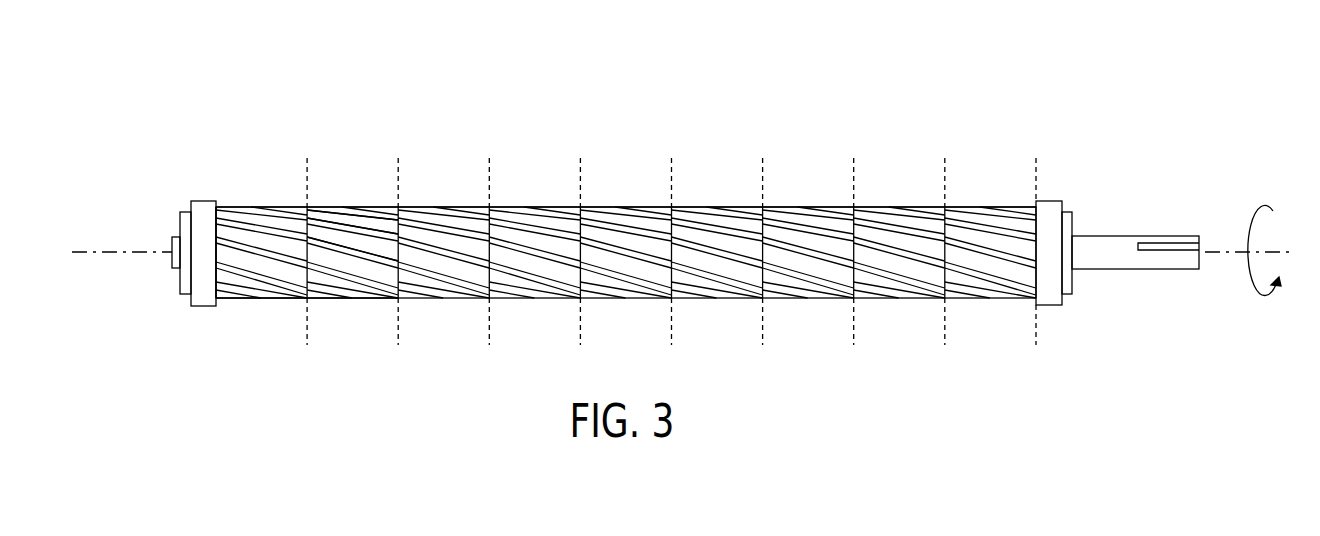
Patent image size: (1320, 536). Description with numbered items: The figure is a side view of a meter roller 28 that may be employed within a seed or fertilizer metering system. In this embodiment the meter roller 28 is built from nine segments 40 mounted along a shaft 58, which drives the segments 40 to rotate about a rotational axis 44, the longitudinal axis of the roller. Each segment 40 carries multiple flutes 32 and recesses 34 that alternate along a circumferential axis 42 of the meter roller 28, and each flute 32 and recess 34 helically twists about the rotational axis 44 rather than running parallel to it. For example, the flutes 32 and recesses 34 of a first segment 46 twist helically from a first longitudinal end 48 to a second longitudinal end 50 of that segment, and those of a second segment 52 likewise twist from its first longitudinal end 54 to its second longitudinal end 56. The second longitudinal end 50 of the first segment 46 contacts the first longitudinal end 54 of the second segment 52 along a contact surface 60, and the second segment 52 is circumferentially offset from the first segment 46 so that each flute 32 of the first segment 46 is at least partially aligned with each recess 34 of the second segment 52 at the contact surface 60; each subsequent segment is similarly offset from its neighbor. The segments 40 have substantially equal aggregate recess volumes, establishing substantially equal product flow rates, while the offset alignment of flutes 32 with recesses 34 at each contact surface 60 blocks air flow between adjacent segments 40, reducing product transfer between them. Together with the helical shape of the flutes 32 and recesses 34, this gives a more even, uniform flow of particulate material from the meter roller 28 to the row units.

The meter roller 28 is at (617, 86).
The flutes 32 is at (594, 259).
The recesses 34 is at (365, 270).
The segments 40 is at (225, 300).
The circumferential axis 42 is at (1263, 302).
The rotational axis 44 is at (1227, 252).
The first segment 46 is at (260, 206).
The first longitudinal end 48 is at (228, 236).
The second longitudinal end 50 is at (307, 264).
The second segment 52 is at (385, 208).
The first longitudinal end 54 is at (318, 226).
The second longitudinal end 56 is at (388, 244).
The shaft 58 is at (1103, 236).
The contact surface 60 is at (308, 327).